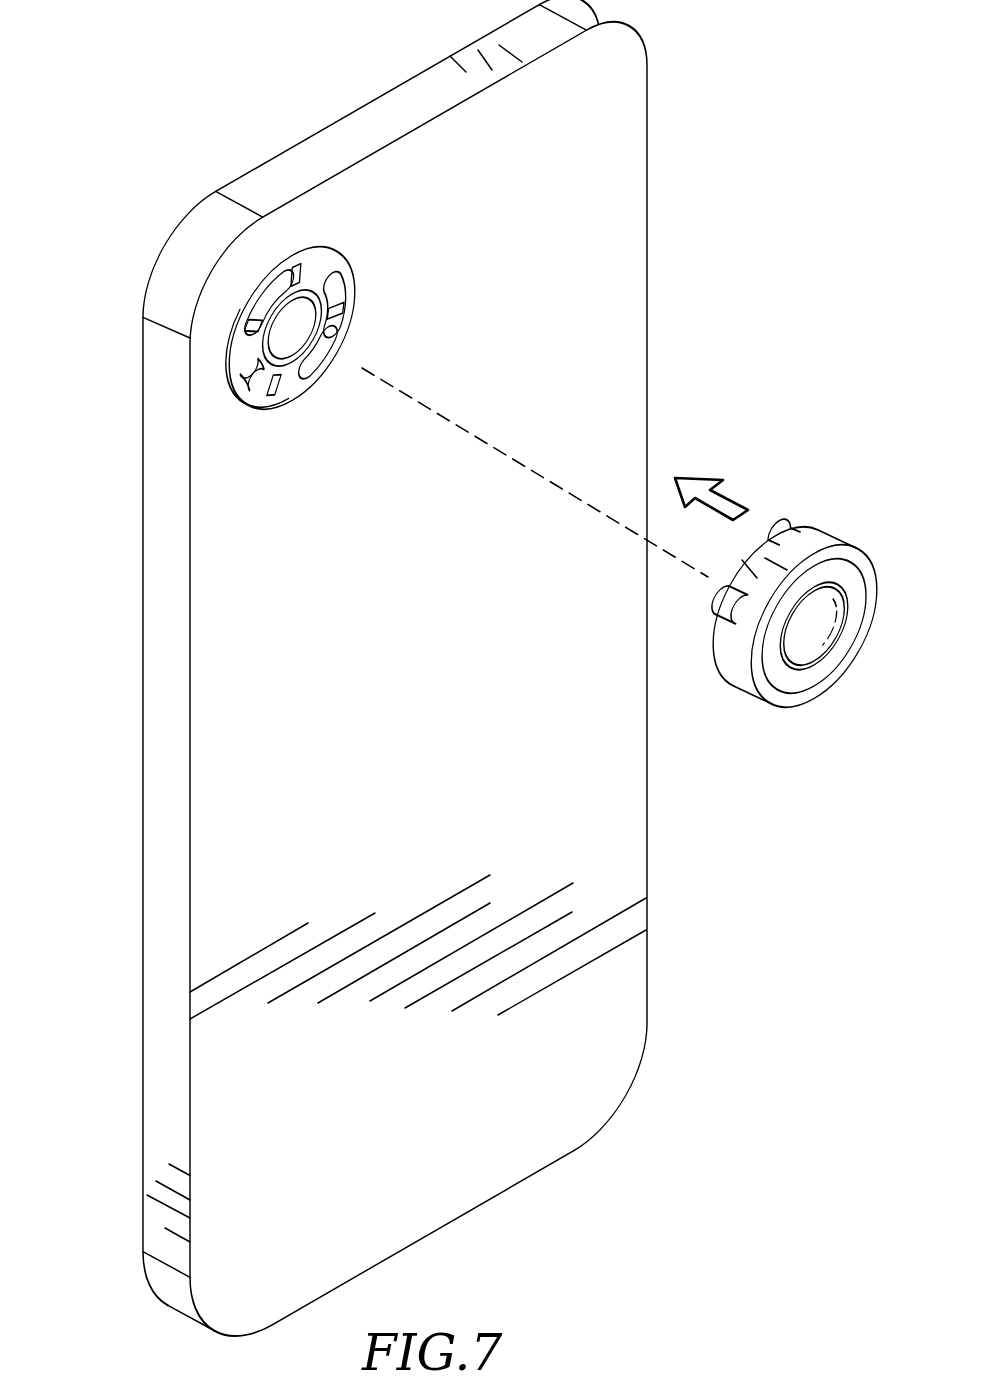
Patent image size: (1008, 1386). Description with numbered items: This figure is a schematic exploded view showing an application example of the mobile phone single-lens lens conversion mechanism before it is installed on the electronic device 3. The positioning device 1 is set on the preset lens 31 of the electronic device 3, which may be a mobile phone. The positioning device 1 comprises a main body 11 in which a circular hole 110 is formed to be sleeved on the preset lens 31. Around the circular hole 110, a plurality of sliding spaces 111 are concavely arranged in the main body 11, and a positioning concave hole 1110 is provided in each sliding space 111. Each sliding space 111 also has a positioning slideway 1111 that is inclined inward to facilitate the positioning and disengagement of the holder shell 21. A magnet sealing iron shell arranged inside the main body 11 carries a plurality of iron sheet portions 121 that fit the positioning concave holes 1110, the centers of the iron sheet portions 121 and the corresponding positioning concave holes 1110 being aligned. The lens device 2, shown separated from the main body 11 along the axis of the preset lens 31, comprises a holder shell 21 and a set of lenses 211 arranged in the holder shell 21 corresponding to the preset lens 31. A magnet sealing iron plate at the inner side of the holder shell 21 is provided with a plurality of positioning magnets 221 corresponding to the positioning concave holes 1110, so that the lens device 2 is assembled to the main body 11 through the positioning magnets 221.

The electronic device 3 is at (399, 103).
The preset lens 31 is at (305, 305).
The positioning device 1 is at (309, 284).
The main body 11 is at (312, 315).
The circular hole 110 is at (260, 380).
The sliding space 111 is at (335, 303).
The positioning concave hole 1110 is at (296, 275).
The positioning slideway 1111 is at (269, 302).
The iron sheet portion 121 is at (310, 253).
The lens device 2 is at (770, 614).
The holder shell 21 is at (814, 626).
The set of lenses 211 is at (814, 626).
The positioning magnet 221 is at (756, 573).